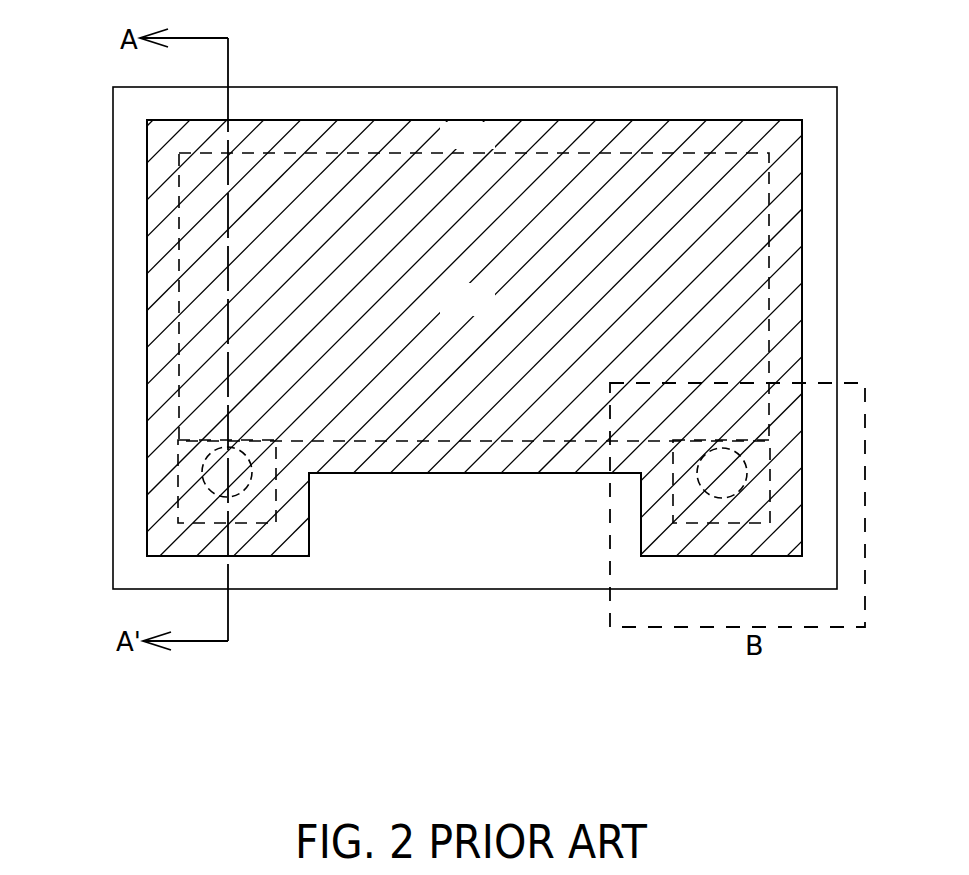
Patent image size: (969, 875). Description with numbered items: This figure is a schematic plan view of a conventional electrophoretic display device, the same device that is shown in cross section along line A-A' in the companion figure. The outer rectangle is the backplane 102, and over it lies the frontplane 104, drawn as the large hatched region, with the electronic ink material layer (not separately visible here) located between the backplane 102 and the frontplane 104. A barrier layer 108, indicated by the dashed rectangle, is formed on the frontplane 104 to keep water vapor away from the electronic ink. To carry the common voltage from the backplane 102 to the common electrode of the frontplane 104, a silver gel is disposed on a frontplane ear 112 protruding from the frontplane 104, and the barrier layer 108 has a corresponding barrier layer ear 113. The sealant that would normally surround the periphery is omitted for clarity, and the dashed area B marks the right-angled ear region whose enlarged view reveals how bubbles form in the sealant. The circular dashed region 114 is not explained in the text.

The backplane 102 is at (490, 113).
The frontplane 104 is at (490, 313).
The barrier layer 108 is at (490, 147).
The frontplane ear 112 is at (175, 512).
The barrier layer ear 113 is at (143, 554).
The circular region 114 is at (247, 491).